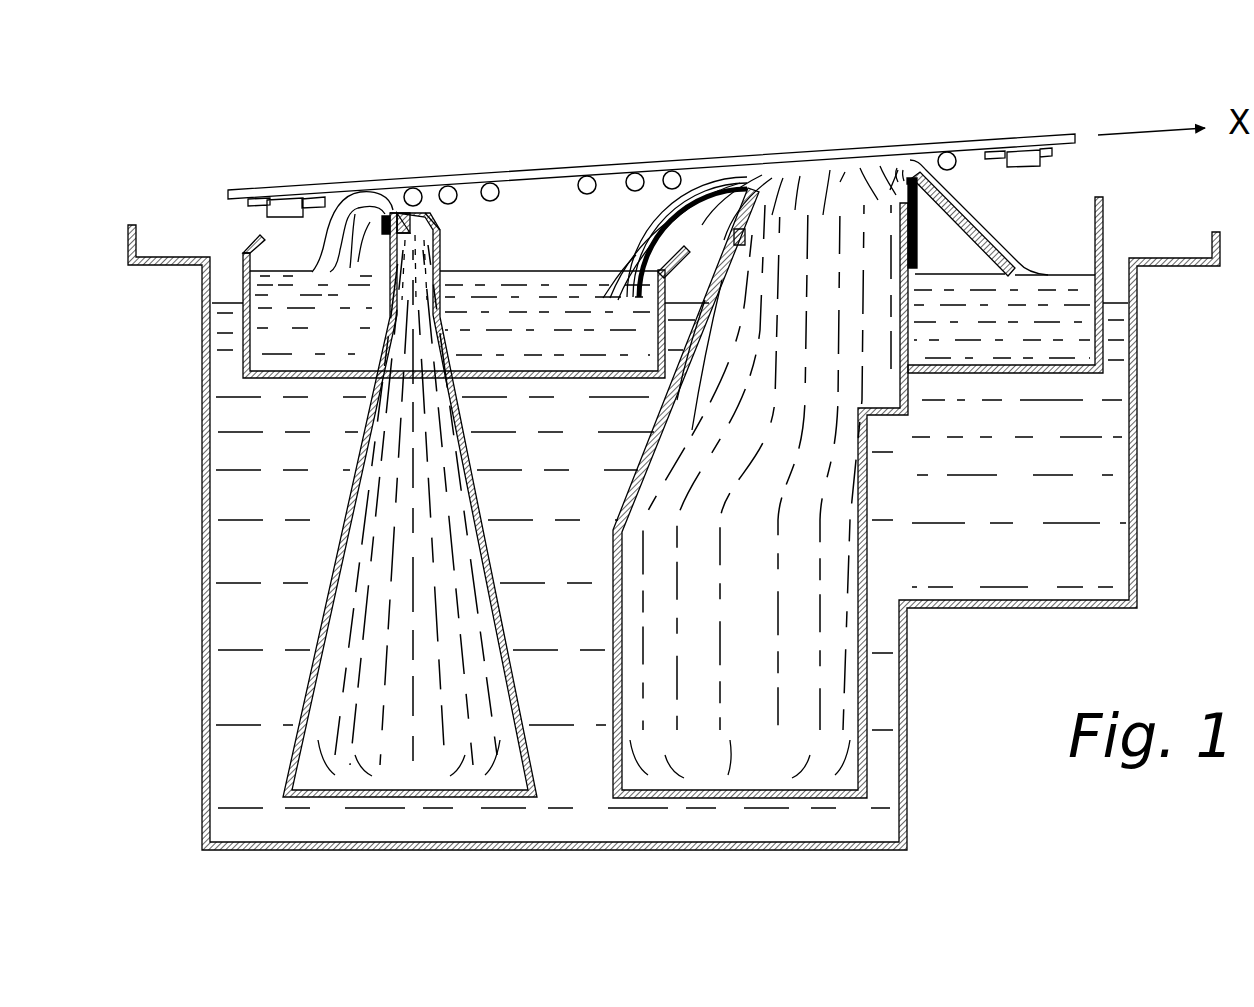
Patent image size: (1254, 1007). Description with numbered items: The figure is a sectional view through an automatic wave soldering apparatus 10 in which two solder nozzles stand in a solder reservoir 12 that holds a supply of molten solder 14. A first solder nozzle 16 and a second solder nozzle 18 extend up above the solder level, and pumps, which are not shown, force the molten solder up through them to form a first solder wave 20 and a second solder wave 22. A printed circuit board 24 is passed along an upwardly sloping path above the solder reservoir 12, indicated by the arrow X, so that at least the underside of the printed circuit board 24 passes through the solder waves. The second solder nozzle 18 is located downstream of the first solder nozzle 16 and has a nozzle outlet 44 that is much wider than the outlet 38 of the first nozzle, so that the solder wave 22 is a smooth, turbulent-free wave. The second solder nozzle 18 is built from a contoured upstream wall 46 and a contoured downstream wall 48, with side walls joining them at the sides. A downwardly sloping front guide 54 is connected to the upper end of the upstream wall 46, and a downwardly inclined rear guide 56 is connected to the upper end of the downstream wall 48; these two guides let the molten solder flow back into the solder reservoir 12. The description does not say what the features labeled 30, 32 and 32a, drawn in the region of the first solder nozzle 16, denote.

The automatic wave soldering apparatus 10 is at (940, 88).
The solder reservoir 12 is at (1140, 283).
The molten solder 14 is at (972, 574).
The first solder nozzle 16 is at (425, 798).
The second solder nozzle 18 is at (760, 800).
The solder wave 20 is at (350, 196).
The solder wave 22 is at (817, 208).
The printed circuit board 24 is at (520, 176).
The first collection tray 30 is at (383, 255).
The nozzle tube 32 is at (440, 250).
The nozzle outlet 32a is at (412, 215).
The outlet 38 is at (410, 210).
The nozzle outlet 44 is at (767, 187).
The upstream wall 46 is at (700, 325).
The downstream wall 48 is at (908, 300).
The front guide 54 is at (640, 249).
The rear guide 56 is at (983, 236).